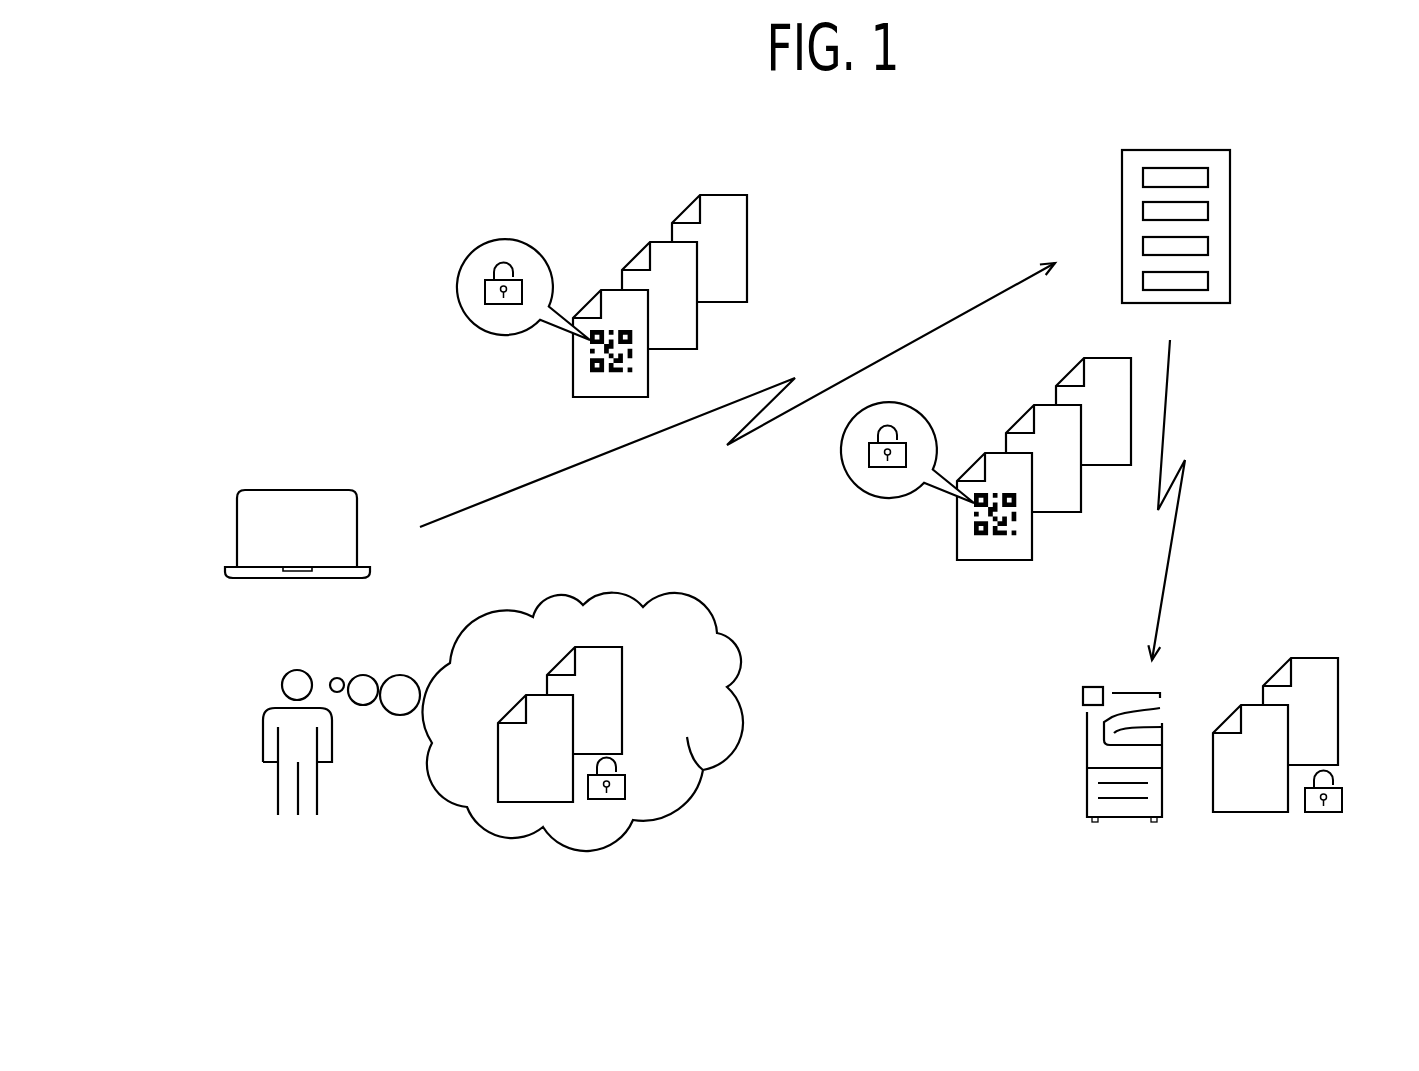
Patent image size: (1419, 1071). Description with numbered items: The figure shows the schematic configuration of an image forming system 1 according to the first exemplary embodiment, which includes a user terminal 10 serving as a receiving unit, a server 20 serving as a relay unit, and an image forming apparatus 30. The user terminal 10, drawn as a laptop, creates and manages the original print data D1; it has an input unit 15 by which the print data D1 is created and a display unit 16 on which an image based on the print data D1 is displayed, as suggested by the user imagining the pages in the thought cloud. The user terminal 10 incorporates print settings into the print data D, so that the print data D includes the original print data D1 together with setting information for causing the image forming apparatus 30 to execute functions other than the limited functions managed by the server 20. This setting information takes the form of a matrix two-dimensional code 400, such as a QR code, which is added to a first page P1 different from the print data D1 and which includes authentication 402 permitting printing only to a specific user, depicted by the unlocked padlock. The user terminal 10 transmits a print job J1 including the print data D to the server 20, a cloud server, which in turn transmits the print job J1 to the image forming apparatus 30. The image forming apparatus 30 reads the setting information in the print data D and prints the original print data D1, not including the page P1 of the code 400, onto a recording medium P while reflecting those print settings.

The image forming system 1 is at (902, 180).
The user terminal 10 is at (282, 529).
The input unit 15 is at (252, 578).
The display unit 16 is at (348, 515).
The server 20 is at (1245, 225).
The image forming apparatus 30 is at (1070, 780).
The matrix two-dimensional code 400 is at (603, 370).
The authentication 402 is at (492, 305).
The print data D is at (660, 238).
The print data D1 is at (730, 283).
The print job J1 is at (630, 240).
The first page P1 is at (568, 363).
The recording medium P is at (1330, 749).